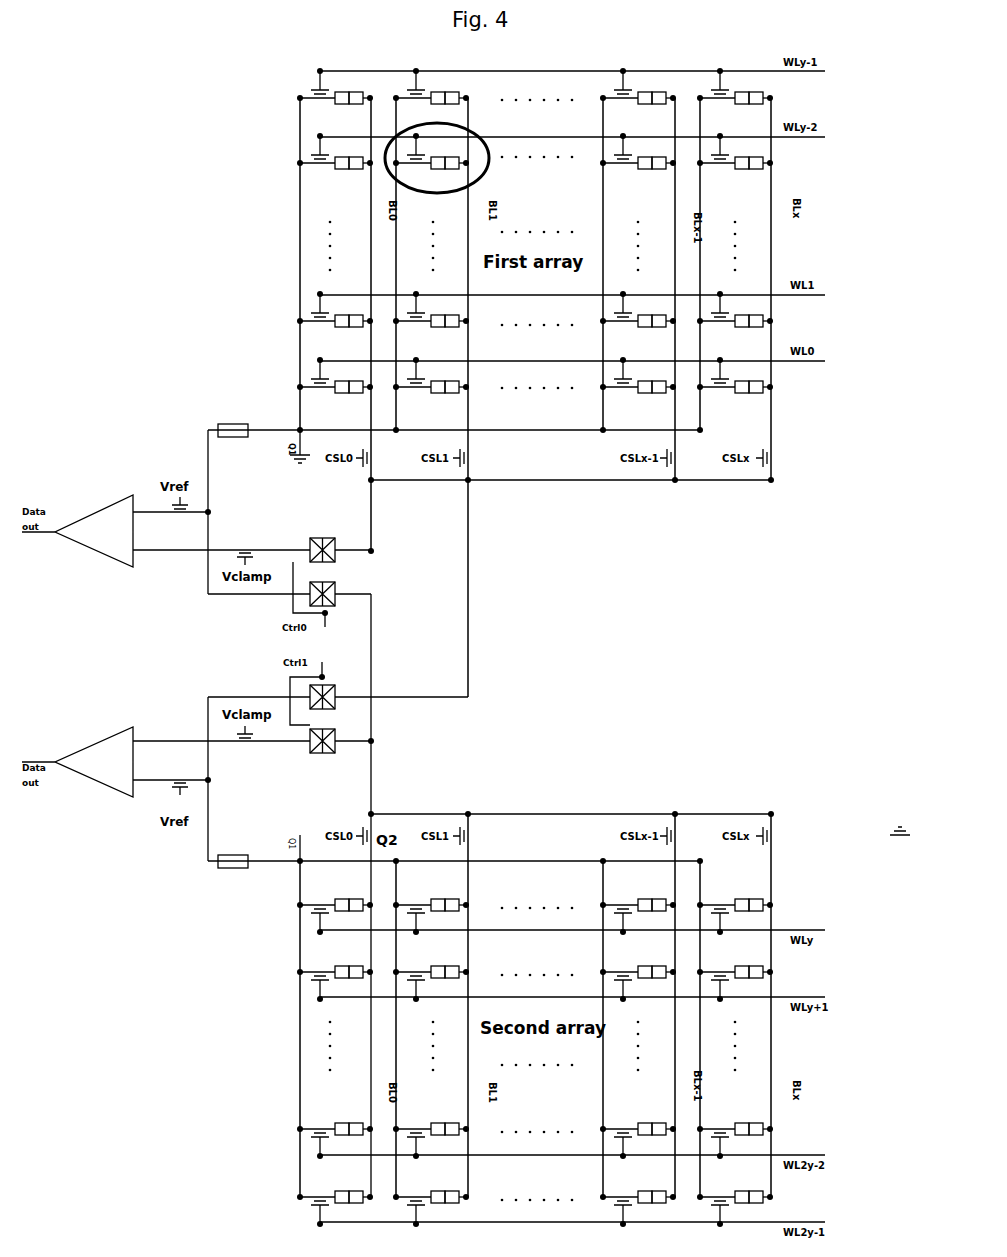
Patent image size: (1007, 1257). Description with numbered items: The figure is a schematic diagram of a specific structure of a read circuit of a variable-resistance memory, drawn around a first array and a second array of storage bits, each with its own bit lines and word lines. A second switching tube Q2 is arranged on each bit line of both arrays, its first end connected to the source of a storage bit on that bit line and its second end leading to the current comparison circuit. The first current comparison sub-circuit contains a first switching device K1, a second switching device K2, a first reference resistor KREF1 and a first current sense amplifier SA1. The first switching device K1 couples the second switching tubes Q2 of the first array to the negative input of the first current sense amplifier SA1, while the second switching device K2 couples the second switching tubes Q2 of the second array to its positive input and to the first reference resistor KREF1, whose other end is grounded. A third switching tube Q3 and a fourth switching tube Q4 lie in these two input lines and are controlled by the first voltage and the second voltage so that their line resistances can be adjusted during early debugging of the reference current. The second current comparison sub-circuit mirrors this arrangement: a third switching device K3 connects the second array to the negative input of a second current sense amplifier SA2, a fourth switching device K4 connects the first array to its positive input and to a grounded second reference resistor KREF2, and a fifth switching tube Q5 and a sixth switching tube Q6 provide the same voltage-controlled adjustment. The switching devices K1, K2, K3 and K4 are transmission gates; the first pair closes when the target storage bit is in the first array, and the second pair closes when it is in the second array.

The first current sense amplifier SA1 is at (77, 531).
The second current sense amplifier SA2 is at (77, 762).
The second switching tube Q2 is at (376, 459).
The third switching tube Q3 is at (245, 549).
The fourth switching tube Q4 is at (179, 515).
The fifth switching tube Q5 is at (245, 748).
The sixth switching tube Q6 is at (179, 779).
The first switching device K1 is at (322, 541).
The second switching device K2 is at (334, 605).
The third switching device K3 is at (322, 750).
The fourth switching device K4 is at (333, 695).
The first reference resistor KREF1 is at (240, 418).
The second reference resistor KREF2 is at (240, 853).